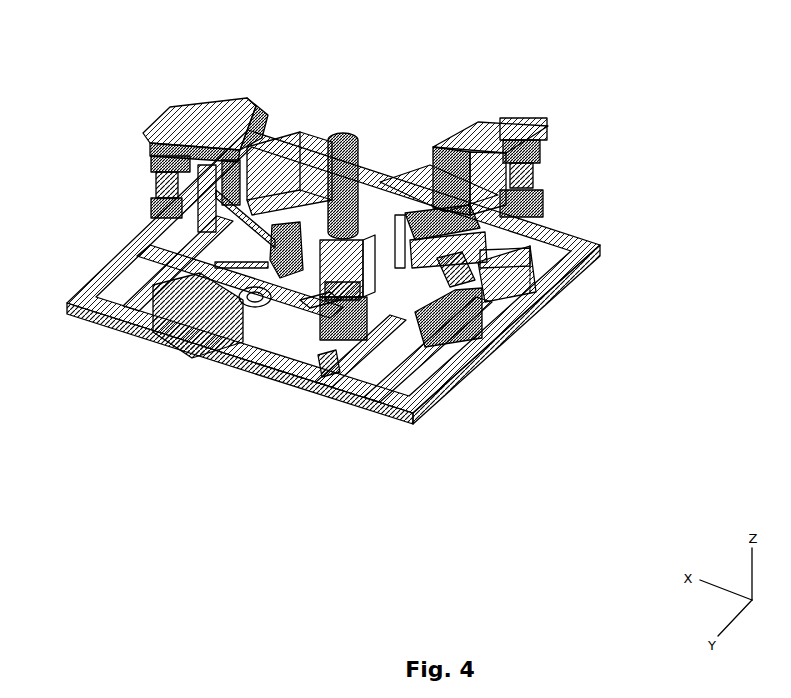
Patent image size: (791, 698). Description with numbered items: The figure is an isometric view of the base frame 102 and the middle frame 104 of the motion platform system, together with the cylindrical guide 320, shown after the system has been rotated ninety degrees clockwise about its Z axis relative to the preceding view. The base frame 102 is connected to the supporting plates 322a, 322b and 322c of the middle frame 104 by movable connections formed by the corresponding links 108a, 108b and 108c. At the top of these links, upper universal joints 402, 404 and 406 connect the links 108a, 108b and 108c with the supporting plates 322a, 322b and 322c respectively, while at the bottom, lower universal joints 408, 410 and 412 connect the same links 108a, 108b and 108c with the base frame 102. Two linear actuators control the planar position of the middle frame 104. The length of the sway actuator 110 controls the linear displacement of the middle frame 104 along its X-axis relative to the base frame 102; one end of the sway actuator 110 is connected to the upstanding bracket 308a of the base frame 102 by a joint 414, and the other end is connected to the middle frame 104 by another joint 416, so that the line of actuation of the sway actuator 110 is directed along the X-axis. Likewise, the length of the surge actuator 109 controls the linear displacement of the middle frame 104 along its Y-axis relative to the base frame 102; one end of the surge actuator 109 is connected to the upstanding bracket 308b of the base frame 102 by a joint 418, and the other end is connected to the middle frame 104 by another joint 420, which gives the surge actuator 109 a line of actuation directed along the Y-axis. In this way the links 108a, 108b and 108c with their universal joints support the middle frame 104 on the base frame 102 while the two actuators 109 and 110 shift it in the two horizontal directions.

The base frame 102 is at (526, 331).
The middle frame 104 is at (540, 102).
The link 108a is at (520, 180).
The link 108b is at (340, 287).
The link 108c is at (163, 188).
The surge actuator 109 is at (250, 278).
The sway actuator 110 is at (448, 268).
The upstanding bracket 308a is at (520, 278).
The upstanding bracket 308b is at (202, 332).
The cylindrical guide 320 is at (345, 134).
The supporting plate 322a is at (522, 118).
The supporting plate 322b is at (345, 310).
The supporting plate 322c is at (218, 103).
The upper universal joint 402 is at (520, 152).
The upper universal joint 404 is at (330, 303).
The upper universal joint 406 is at (166, 160).
The lower universal joint 408 is at (520, 204).
The lower universal joint 410 is at (330, 367).
The lower universal joint 412 is at (162, 214).
The joint 414 is at (497, 260).
The joint 416 is at (400, 262).
The joint 418 is at (233, 295).
The joint 420 is at (277, 268).